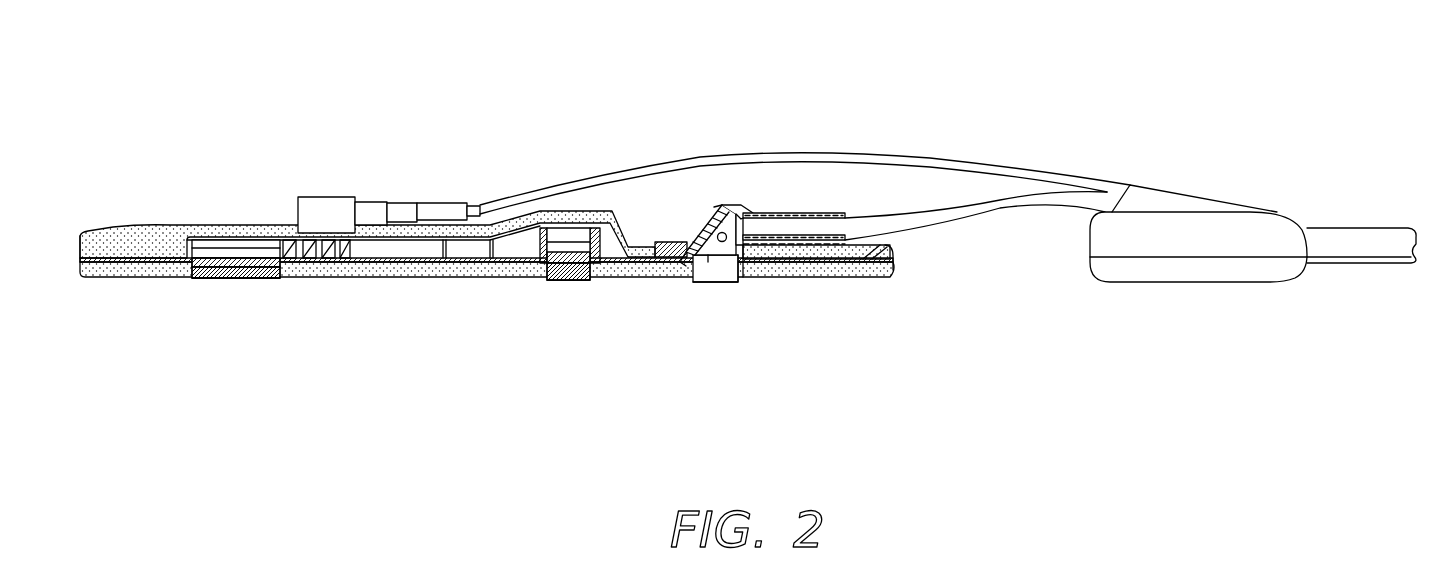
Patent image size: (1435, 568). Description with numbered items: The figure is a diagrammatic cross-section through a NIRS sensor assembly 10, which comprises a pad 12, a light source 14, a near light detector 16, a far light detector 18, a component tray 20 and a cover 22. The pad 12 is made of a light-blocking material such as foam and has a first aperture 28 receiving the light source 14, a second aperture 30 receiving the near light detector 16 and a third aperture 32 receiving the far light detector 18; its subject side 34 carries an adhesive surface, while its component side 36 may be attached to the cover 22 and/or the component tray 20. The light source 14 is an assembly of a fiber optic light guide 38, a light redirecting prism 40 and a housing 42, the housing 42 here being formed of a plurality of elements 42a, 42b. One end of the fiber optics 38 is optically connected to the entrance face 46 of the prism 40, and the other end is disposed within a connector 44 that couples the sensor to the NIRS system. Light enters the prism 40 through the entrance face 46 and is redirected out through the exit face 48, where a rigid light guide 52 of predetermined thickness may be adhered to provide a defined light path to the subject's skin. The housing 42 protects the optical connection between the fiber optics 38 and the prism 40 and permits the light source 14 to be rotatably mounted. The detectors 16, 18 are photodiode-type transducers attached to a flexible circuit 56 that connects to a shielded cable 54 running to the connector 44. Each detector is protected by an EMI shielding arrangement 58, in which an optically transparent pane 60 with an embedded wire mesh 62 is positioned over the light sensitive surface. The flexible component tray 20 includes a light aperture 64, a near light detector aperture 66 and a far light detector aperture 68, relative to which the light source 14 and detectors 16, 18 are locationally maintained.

The NIRS sensor assembly 10 is at (832, 90).
The pad 12 is at (387, 282).
The light source 14 is at (731, 195).
The near light detector 16 is at (567, 293).
The far light detector 18 is at (206, 292).
The component tray 20 is at (485, 225).
The cover 22 is at (160, 226).
The first aperture 28 is at (728, 282).
The second aperture 30 is at (590, 280).
The third aperture 32 is at (266, 282).
The subject side 34 is at (773, 282).
The component side 36 is at (888, 243).
The fiber optic light guide 38 is at (812, 218).
The light redirecting prism 40 is at (741, 210).
The housing 42 is at (706, 212).
The housing element 42a is at (716, 208).
The housing element 42b is at (678, 272).
The connector 44 is at (1170, 282).
The entrance face 46 is at (758, 217).
The exit face 48 is at (696, 232).
The light guide 52 is at (720, 282).
The shielded cable 54 is at (930, 157).
The flexible circuit 56 is at (445, 250).
The EMI shielding arrangement 58 is at (191, 285).
The pane 60 is at (252, 256).
The wire mesh 62 is at (224, 259).
The light aperture 64 is at (707, 262).
The near light detector aperture 66 is at (560, 240).
The far light detector aperture 68 is at (203, 237).